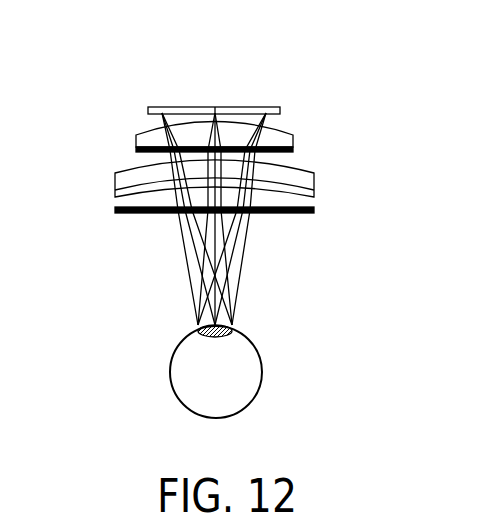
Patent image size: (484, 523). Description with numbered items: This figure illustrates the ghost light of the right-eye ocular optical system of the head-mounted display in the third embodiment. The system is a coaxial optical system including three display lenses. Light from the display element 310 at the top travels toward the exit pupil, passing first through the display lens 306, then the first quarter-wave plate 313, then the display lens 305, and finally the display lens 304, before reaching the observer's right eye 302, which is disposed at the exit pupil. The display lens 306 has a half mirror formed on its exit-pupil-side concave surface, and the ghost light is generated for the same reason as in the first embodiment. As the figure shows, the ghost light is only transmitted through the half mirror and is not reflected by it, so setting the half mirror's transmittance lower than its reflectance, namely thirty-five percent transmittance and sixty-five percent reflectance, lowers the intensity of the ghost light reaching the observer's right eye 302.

The display element 310 is at (243, 105).
The display lens 306 is at (295, 143).
The display lens 305 is at (315, 182).
The first λ/4 plate 313 is at (130, 187).
The display lens 304 is at (315, 208).
The observer's right eye 302 is at (233, 381).